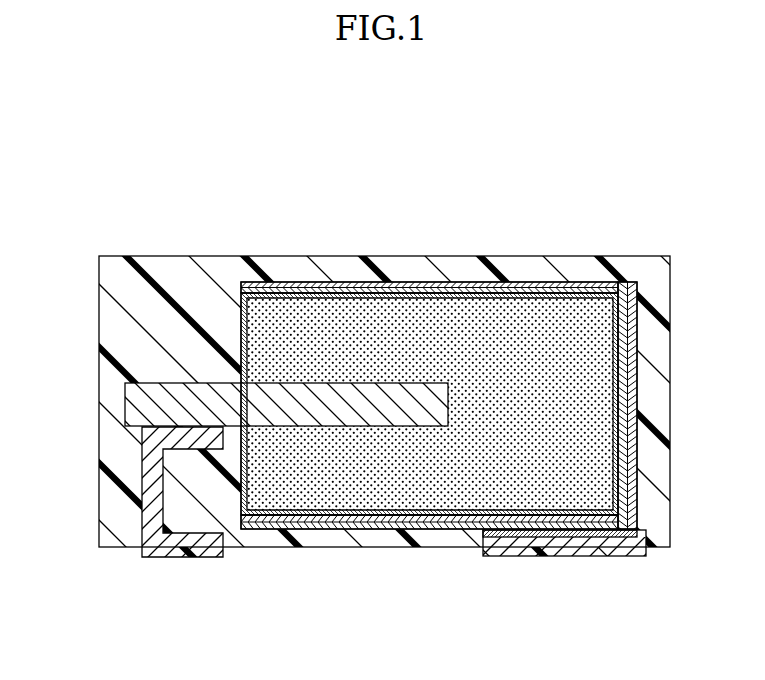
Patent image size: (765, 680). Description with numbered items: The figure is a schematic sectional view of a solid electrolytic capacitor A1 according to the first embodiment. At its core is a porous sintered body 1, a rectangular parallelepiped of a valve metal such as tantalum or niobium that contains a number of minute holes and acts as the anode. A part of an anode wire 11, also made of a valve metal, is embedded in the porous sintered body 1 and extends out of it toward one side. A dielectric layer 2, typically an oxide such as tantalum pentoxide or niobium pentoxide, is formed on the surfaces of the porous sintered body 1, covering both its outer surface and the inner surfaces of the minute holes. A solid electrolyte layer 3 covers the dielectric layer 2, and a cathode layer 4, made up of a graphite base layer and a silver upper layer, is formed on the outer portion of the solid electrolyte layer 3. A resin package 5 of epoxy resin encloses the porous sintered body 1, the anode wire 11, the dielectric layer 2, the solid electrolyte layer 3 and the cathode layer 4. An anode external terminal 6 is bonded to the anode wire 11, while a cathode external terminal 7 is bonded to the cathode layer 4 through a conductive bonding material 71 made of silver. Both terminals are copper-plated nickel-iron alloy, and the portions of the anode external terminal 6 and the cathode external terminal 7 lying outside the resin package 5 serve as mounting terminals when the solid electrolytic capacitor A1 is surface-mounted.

The solid electrolytic capacitor A1 is at (121, 251).
The porous sintered body 1 is at (337, 338).
The dielectric layer 2 is at (395, 298).
The solid electrolyte layer 3 is at (440, 290).
The cathode layer 4 is at (484, 282).
The resin package 5 is at (118, 318).
The anode external terminal 6 is at (196, 558).
The cathode external terminal 7 is at (537, 549).
The conductive bonding material 71 is at (601, 537).
The anode wire 11 is at (135, 405).